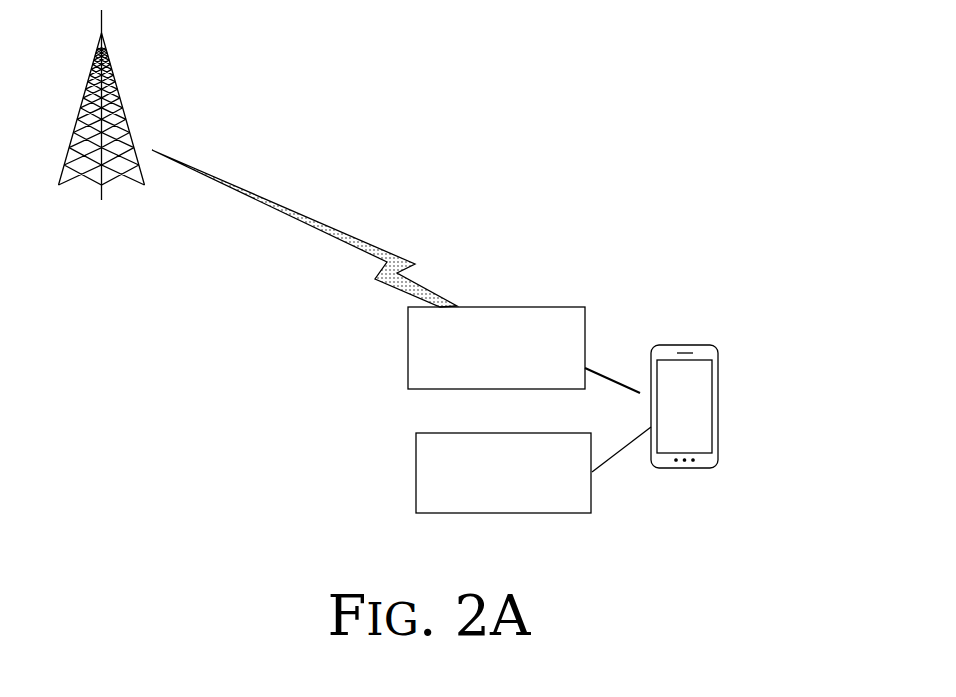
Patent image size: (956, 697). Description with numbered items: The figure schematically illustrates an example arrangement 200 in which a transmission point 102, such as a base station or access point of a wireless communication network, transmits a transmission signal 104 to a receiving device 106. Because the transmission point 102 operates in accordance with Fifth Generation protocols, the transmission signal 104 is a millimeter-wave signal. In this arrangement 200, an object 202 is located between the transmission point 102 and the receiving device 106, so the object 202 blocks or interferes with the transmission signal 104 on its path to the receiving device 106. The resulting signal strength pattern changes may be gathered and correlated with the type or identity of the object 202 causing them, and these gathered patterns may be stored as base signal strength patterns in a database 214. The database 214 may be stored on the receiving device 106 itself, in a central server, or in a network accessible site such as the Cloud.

The arrangement 200 is at (603, 122).
The transmission point 102 is at (103, 140).
The transmission signal 104 is at (320, 223).
The object 202 is at (524, 350).
The database 214 is at (533, 470).
The receiving device 106 is at (717, 349).